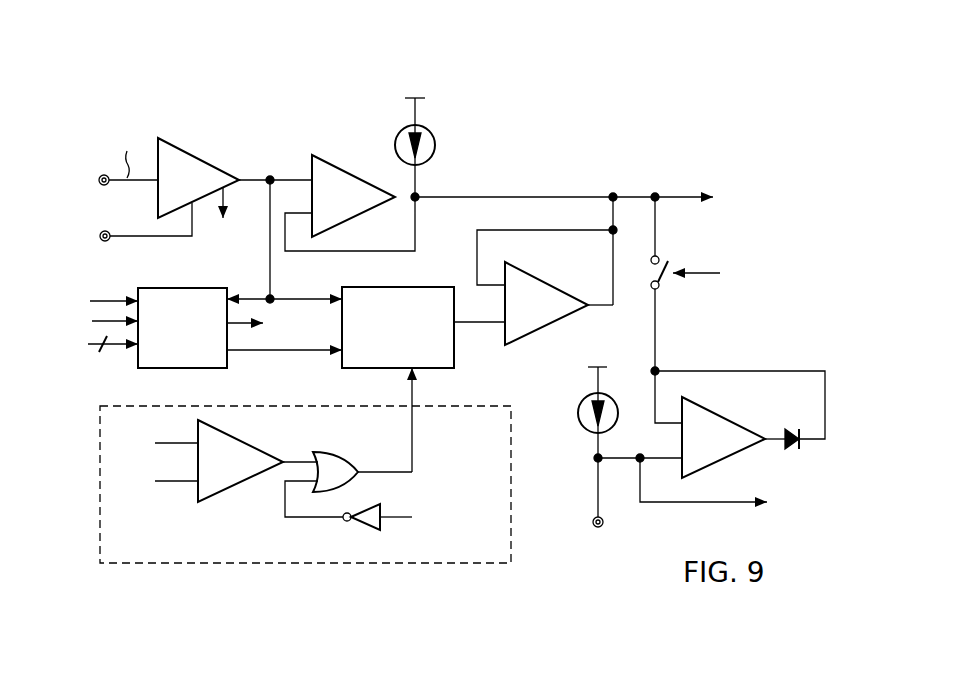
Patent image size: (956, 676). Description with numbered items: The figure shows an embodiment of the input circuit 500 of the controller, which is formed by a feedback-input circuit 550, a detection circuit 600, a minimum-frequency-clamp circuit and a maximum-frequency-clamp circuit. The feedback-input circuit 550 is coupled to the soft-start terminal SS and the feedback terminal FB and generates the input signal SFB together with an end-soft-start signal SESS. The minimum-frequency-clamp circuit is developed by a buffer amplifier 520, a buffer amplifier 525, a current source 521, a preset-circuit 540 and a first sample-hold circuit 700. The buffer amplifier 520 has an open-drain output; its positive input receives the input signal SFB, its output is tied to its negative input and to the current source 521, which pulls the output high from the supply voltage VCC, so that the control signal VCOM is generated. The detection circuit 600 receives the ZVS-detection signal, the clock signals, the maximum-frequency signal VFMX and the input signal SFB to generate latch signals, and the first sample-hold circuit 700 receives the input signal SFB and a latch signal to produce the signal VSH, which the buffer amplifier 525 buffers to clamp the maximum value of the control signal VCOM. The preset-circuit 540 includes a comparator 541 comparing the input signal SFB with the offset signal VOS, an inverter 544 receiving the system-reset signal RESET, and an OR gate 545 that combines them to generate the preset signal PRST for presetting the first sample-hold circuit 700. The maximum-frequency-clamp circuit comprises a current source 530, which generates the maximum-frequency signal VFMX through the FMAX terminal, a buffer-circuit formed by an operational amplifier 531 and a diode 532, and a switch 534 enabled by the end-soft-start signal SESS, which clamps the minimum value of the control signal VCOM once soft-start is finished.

The input circuit 500 is at (778, 64).
The feedback-input circuit 550 is at (191, 214).
The buffer amplifier 520 is at (352, 191).
The current source 521 is at (439, 135).
The buffer amplifier 525 is at (535, 271).
The switch 534 is at (689, 284).
The current source 530 is at (581, 429).
The operational amplifier 531 is at (723, 434).
The diode 532 is at (791, 428).
The detection circuit 600 is at (152, 320).
The first sample-hold circuit 700 is at (399, 315).
The preset-circuit 540 is at (305, 465).
The comparator 541 is at (198, 456).
The OR gate 545 is at (347, 471).
The inverter 544 is at (403, 526).